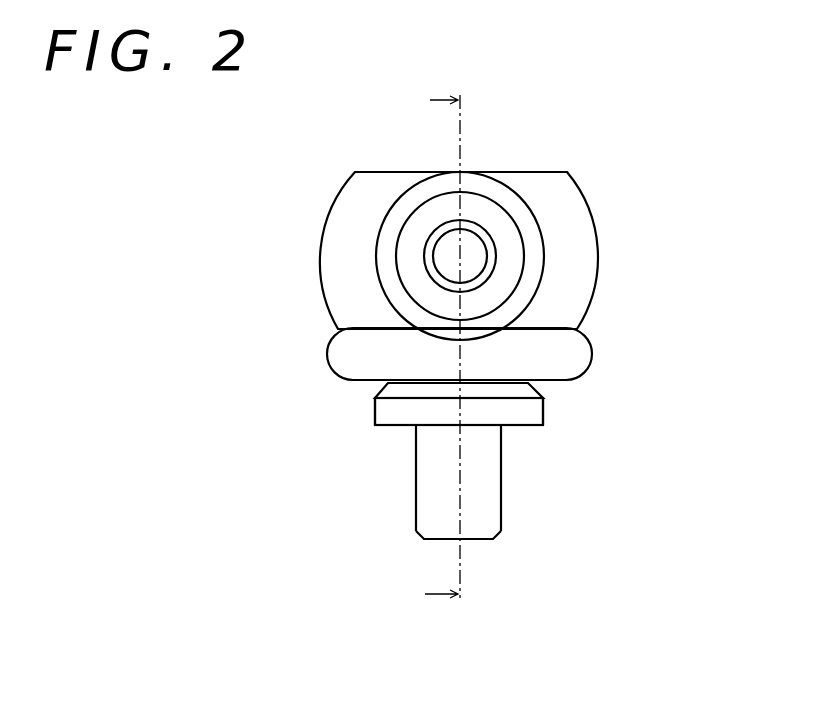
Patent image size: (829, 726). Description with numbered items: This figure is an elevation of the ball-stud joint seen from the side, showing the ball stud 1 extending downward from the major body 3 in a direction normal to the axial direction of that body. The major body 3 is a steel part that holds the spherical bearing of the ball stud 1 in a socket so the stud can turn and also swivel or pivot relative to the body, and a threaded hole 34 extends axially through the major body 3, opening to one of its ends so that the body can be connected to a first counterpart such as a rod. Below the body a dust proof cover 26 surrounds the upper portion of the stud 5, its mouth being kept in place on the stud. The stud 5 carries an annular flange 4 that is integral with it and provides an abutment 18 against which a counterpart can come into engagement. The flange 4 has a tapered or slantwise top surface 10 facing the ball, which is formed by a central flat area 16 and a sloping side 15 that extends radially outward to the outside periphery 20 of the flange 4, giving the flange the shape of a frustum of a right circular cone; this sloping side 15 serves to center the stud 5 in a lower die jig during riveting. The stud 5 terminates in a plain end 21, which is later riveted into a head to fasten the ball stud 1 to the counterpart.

The ball stud 1 is at (408, 468).
The major body 3 is at (418, 236).
The annular flange 4 is at (523, 413).
The stud 5 is at (478, 468).
The tapered surface 10 is at (545, 397).
The sloping side 15 is at (383, 386).
The central flat area 16 is at (403, 380).
The abutment 18 is at (402, 426).
The outside periphery 20 is at (373, 413).
The plain end 21 is at (480, 527).
The dust proof cover 26 is at (535, 272).
The threaded hole 34 is at (480, 236).